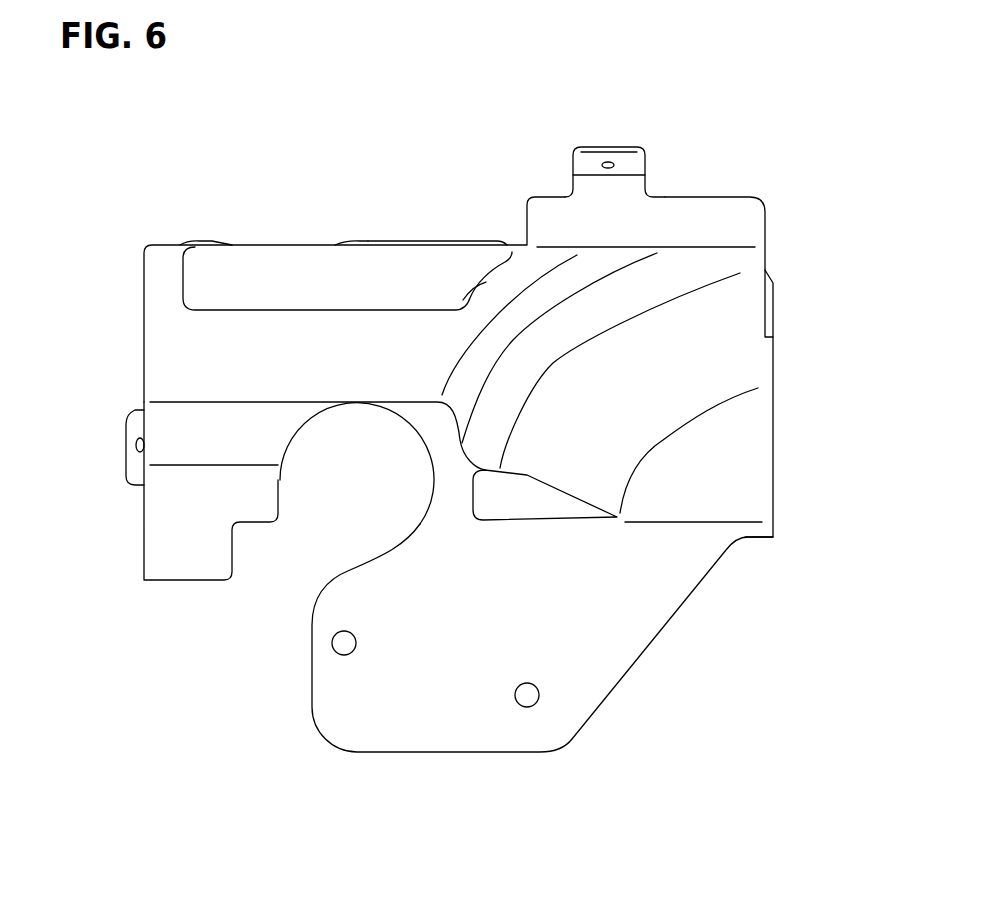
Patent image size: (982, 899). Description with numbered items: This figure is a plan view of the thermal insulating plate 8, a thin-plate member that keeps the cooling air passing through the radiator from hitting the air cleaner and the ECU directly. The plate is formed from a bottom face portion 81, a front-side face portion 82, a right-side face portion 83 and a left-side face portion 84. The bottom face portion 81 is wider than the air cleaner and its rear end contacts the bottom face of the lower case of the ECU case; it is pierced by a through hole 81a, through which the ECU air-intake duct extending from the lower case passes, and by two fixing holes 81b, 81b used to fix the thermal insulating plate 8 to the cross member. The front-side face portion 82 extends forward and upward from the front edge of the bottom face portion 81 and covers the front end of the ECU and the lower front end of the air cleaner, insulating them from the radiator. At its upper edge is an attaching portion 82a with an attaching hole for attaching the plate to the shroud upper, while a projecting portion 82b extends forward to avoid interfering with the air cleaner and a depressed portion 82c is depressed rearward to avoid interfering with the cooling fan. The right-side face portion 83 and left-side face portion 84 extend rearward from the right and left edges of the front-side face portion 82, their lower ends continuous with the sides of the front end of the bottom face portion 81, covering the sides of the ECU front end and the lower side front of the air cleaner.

The thermal insulating plate 8 is at (373, 101).
The bottom face portion 81 is at (298, 367).
The through hole 81a is at (357, 402).
The fixing holes 81b is at (354, 633).
The front-side face portion 82 is at (298, 242).
The attaching portion 82a is at (610, 145).
The projecting portion 82b is at (412, 272).
The depressed portion 82c is at (703, 348).
The right-side face portion 83 is at (775, 400).
The left-side face portion 84 is at (146, 320).